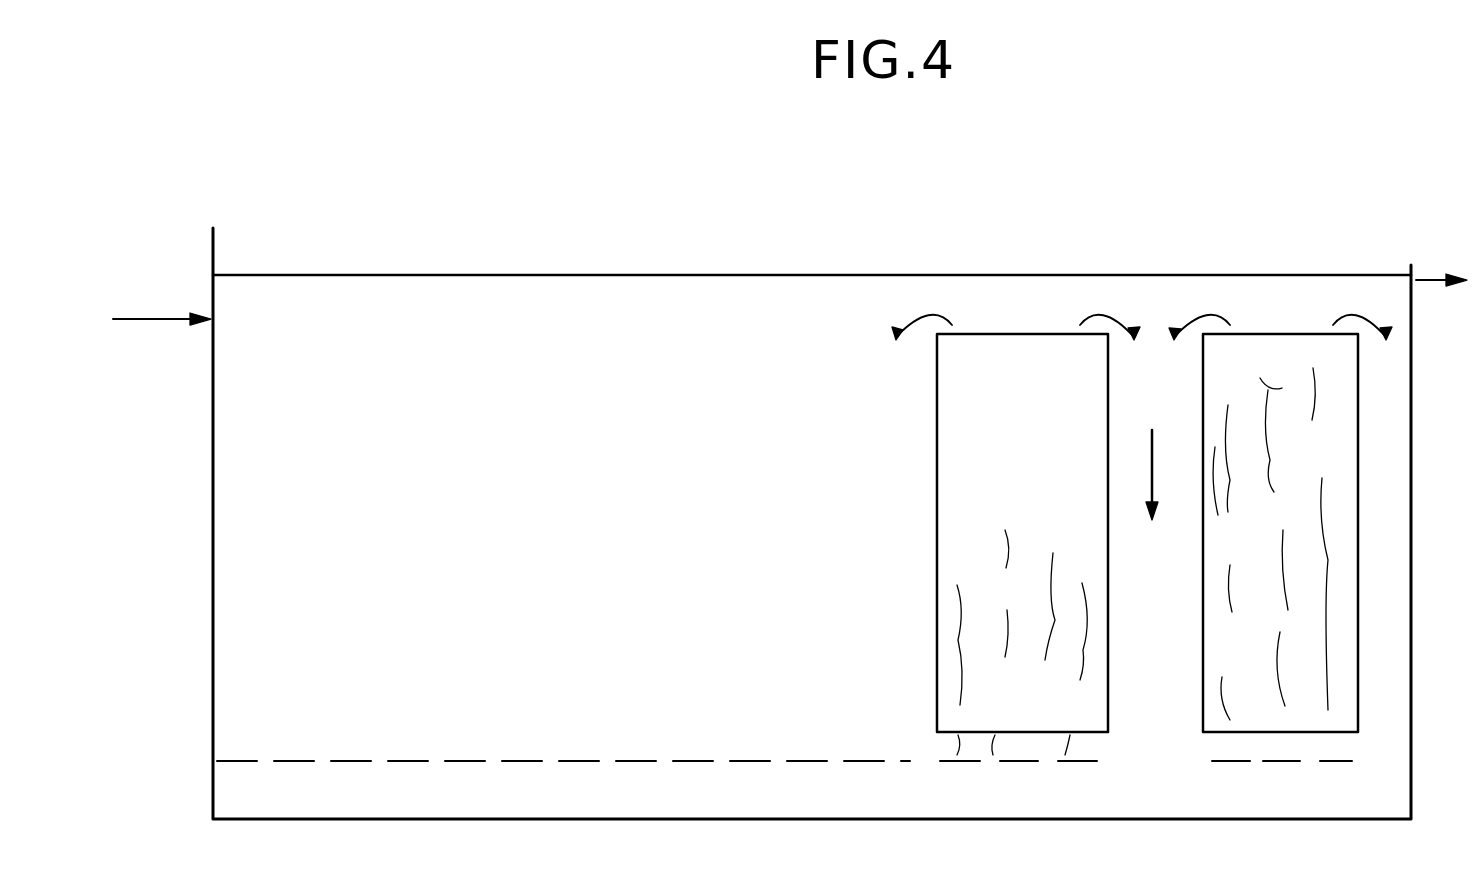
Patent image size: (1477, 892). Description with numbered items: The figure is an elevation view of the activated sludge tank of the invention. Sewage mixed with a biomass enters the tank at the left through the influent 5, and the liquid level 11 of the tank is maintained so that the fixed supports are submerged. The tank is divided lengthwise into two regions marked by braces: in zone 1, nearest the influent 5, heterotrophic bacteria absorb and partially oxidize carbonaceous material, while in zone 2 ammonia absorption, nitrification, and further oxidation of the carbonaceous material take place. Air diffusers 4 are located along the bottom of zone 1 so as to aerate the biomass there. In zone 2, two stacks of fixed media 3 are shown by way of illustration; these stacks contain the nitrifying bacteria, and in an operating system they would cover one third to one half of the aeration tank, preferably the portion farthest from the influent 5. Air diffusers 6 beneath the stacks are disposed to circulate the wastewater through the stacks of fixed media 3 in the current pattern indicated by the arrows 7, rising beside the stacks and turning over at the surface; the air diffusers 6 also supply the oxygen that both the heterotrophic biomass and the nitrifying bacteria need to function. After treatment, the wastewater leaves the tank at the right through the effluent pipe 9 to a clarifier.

The zone 1 is at (223, 250).
The zone 2 is at (1405, 250).
The stacks of fixed media 3 is at (1012, 360).
The air diffusers 4 is at (400, 761).
The influent 5 is at (211, 333).
The air diffusers 6 is at (1020, 762).
The arrows 7 is at (905, 312).
The effluent pipe 9 is at (1427, 278).
The liquid level 11 is at (396, 272).